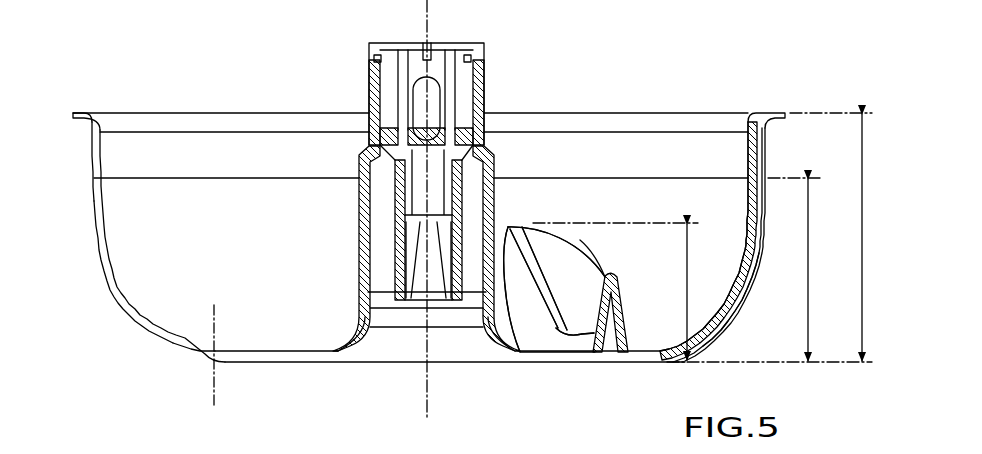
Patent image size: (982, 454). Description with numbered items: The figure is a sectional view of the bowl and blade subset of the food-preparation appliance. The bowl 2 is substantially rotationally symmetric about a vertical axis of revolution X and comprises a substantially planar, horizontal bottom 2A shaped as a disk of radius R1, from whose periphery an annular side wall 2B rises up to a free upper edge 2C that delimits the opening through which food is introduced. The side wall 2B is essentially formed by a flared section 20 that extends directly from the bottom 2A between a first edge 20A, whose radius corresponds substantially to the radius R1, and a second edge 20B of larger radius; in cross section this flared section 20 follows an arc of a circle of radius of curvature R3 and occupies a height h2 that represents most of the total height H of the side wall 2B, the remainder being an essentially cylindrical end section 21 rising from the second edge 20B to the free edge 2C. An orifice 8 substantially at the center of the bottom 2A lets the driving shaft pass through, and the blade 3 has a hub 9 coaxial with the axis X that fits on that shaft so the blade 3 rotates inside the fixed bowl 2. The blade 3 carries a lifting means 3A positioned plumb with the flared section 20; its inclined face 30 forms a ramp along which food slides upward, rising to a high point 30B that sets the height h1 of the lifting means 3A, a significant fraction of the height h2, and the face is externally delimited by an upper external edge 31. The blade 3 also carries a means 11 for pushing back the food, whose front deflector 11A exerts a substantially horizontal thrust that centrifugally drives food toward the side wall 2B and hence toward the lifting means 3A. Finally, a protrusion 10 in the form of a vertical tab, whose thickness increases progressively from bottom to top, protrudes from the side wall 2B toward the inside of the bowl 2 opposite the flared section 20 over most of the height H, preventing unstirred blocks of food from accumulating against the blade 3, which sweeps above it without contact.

The bowl 2 is at (410, 216).
The bottom 2A is at (282, 355).
The side wall 2B is at (746, 273).
The free upper edge 2C is at (83, 106).
The flared section 20 is at (723, 303).
The first edge 20A is at (205, 360).
The second edge 20B is at (88, 180).
The end section 21 is at (92, 150).
The blade 3 is at (592, 255).
The lifting means 3A is at (603, 247).
The inclined face 30 is at (545, 258).
The high point 30B is at (515, 225).
The upper external edge 31 is at (578, 237).
The orifice 8 is at (458, 336).
The hub 9 is at (499, 207).
The protrusion 10 is at (745, 222).
The means for pushing back the food 11 is at (596, 289).
The front deflector 11A is at (628, 313).
The axis of revolution X is at (440, 213).
The radius of the bottom R1 is at (427, 317).
The radius of curvature of the flared section R3 is at (137, 290).
The height of the lifting means h1 is at (687, 290).
The height of the flared section h2 is at (808, 285).
The height of the side wall H is at (862, 255).